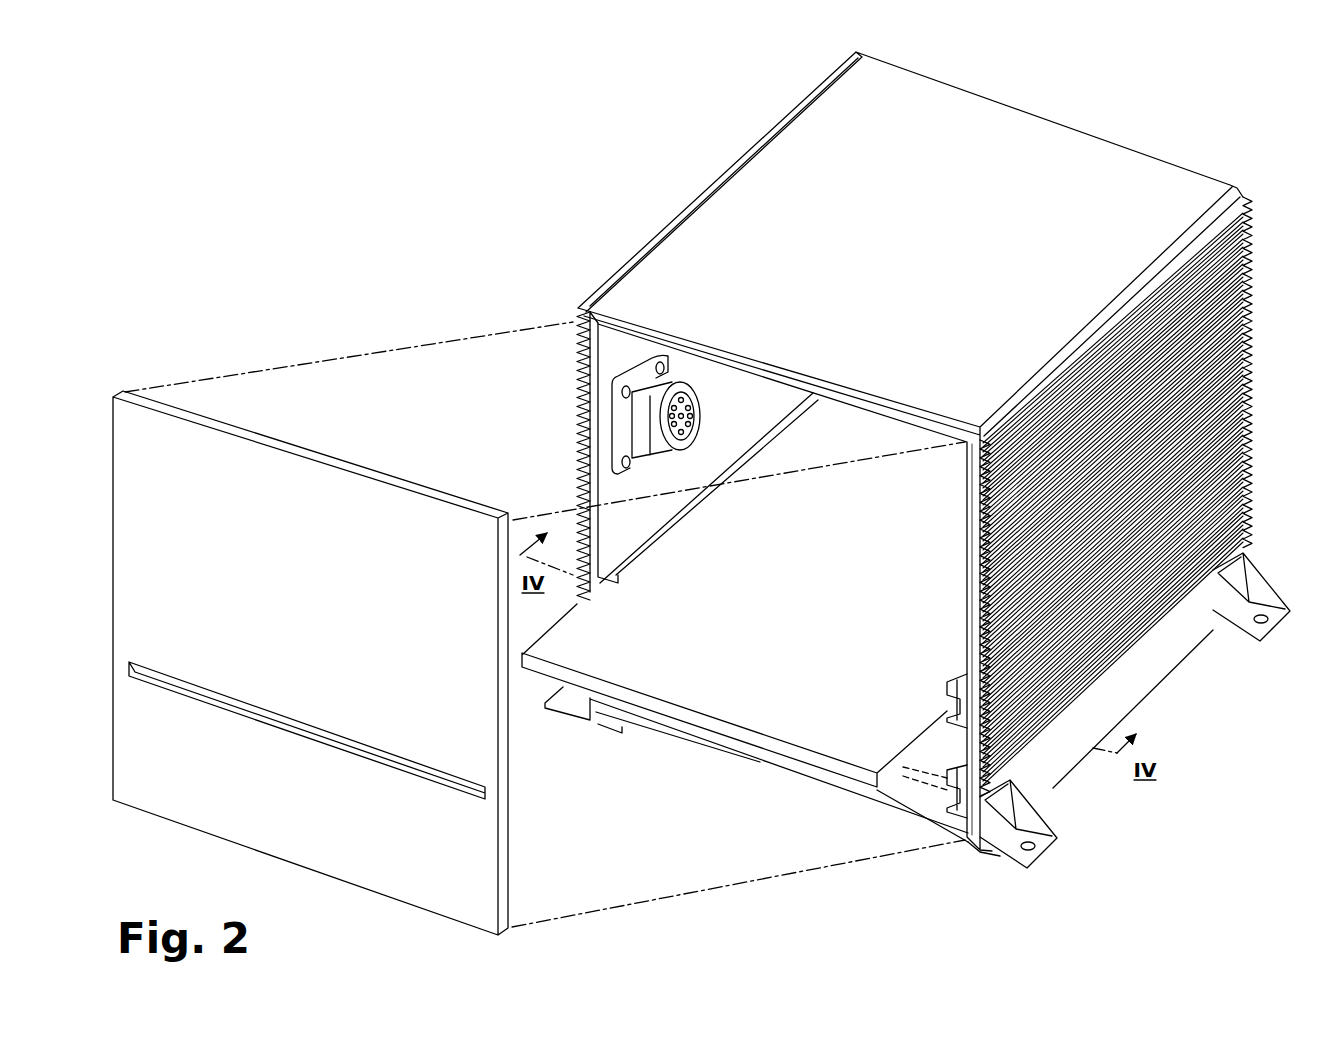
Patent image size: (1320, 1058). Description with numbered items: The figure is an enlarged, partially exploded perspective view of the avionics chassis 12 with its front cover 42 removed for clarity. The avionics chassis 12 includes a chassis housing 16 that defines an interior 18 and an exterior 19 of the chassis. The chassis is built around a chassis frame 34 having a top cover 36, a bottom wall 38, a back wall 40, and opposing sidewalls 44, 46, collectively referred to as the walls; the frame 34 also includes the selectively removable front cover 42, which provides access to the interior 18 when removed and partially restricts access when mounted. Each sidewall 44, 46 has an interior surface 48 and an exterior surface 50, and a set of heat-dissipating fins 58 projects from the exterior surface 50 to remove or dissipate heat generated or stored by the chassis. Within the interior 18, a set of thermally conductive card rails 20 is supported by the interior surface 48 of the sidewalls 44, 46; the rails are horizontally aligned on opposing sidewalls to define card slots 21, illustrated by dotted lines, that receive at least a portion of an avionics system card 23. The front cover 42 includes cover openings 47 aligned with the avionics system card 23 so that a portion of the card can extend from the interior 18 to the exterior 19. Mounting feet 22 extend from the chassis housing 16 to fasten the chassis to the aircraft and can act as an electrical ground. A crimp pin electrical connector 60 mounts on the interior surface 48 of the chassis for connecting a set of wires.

The avionics chassis 12 is at (572, 110).
The chassis housing 16 is at (1056, 102).
The interior 18 is at (828, 515).
The exterior 19 is at (1003, 68).
The thermally conductive card rails 20 is at (977, 650).
The card slots 21 is at (917, 777).
The mounting feet 22 is at (995, 842).
The avionics system card 23 is at (540, 682).
The chassis frame 34 is at (957, 833).
The top cover 36 is at (835, 172).
The bottom wall 38 is at (675, 728).
The back wall 40 is at (1208, 168).
The front cover 42 is at (275, 823).
The sidewall 44 is at (595, 425).
The sidewall 46 is at (972, 522).
The cover openings 47 is at (170, 690).
The interior surface 48 is at (968, 664).
The exterior surface 50 is at (1042, 792).
The fins 58 is at (1177, 492).
The crimp pin electrical connector 60 is at (630, 368).